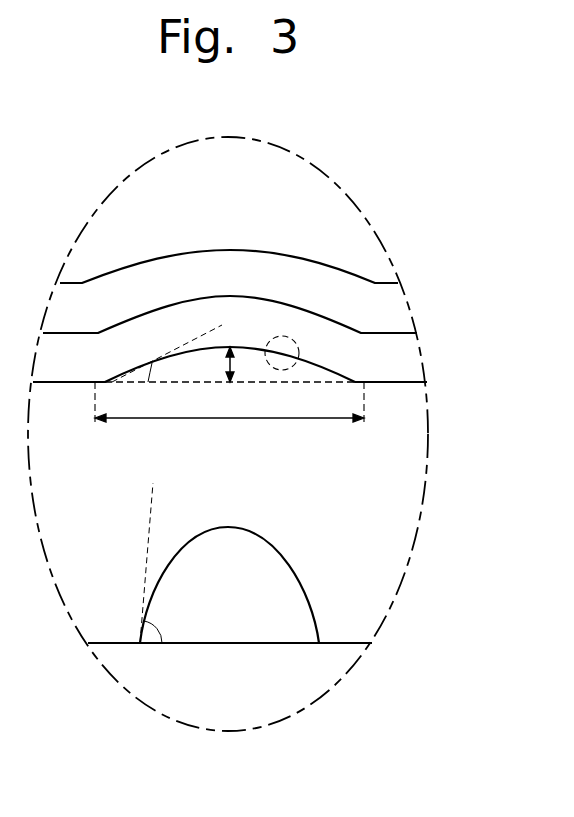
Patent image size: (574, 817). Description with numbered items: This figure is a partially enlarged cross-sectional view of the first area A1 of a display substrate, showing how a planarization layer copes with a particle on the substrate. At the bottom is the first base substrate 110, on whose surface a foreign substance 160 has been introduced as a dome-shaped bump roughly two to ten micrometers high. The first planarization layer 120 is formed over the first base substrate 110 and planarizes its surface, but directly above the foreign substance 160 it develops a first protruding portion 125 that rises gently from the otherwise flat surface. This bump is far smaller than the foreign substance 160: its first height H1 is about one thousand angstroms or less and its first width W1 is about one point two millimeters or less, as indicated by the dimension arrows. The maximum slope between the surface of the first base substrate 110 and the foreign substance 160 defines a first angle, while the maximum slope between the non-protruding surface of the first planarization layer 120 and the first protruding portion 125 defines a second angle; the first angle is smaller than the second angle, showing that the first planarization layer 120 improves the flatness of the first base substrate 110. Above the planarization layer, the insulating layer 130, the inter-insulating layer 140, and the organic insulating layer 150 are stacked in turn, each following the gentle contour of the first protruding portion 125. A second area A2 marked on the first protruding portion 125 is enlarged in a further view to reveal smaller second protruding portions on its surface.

The first base substrate 110 is at (338, 670).
The first planarization layer 120 is at (405, 452).
The first protruding portion 125 is at (243, 346).
The insulating layer 130 is at (267, 322).
The inter-insulating layer 140 is at (395, 310).
The organic insulating layer 150 is at (362, 243).
The foreign substance 160 is at (290, 603).
The first area A1 is at (298, 150).
The second area A2 is at (299, 350).
The first height H1 is at (245, 364).
The first width W1 is at (229, 404).